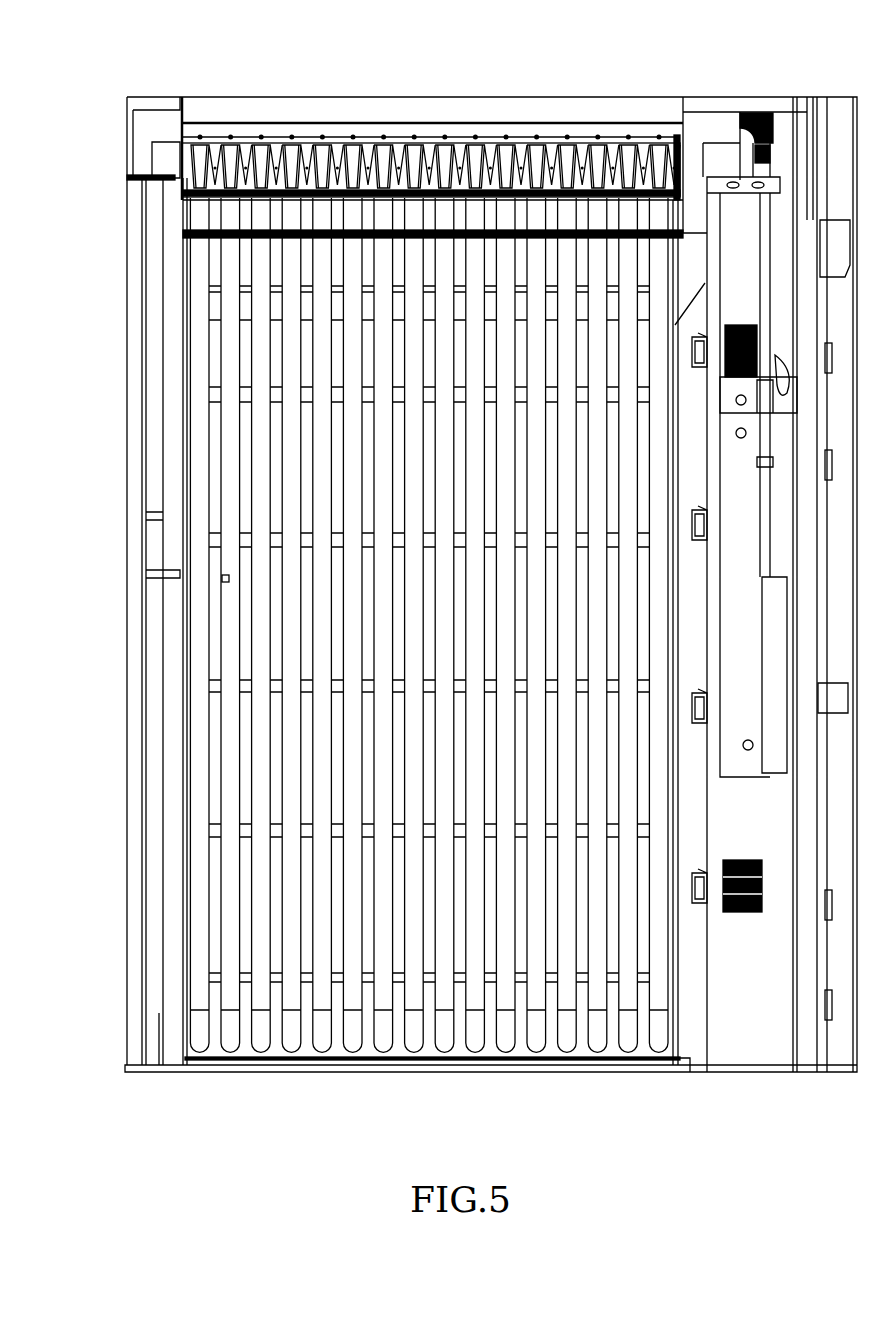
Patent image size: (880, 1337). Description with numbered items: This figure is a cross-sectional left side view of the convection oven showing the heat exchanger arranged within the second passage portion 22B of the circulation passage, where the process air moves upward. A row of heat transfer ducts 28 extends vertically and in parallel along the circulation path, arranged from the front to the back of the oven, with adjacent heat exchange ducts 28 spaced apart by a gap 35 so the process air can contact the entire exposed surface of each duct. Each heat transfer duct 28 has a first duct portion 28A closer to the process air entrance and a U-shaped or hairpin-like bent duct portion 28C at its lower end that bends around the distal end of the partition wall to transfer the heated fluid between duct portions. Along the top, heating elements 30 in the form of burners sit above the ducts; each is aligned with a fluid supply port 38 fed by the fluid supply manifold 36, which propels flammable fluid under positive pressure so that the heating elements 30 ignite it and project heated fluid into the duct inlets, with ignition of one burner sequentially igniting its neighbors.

The second passage portion 22B is at (359, 597).
The heat transfer duct 28 is at (258, 1020).
The first duct portion 28A is at (198, 332).
The bent duct portion 28C is at (200, 1043).
The heating element 30 is at (198, 167).
The gap 35 is at (468, 300).
The fluid supply manifold 36 is at (339, 123).
The fluid supply port 38 is at (268, 135).